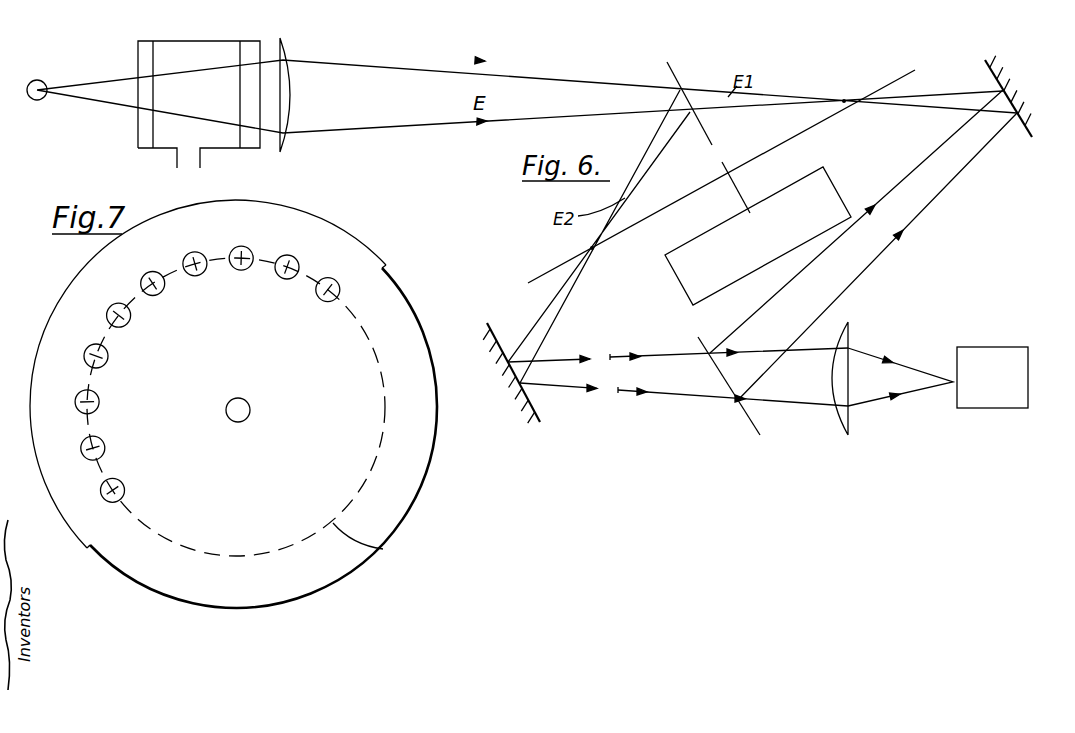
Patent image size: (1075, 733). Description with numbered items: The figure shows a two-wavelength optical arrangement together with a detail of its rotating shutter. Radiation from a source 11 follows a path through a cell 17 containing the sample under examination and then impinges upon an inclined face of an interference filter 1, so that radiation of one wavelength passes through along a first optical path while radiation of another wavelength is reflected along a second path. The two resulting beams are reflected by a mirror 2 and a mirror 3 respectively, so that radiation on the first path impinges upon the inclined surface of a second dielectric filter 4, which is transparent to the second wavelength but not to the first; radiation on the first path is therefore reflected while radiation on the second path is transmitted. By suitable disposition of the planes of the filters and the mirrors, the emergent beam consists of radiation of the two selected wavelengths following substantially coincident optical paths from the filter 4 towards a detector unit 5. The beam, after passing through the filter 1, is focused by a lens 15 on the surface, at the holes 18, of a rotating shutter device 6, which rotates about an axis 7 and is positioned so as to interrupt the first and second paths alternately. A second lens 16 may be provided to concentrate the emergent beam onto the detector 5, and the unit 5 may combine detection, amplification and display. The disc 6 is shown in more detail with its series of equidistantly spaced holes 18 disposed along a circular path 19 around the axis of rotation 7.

In FIG. 6, the interference filter 1 is at (672, 67).
In FIG. 6, the mirror 2 is at (1006, 90).
In FIG. 6, the mirror 3 is at (543, 410).
In FIG. 6, the second dielectric filter 4 is at (748, 421).
In FIG. 6, the detector unit 5 is at (992, 377).
In FIG. 6, the rotating shutter device 6 is at (655, 215).
In FIG. 7, the rotating shutter device 6 is at (392, 520).
In FIG. 6, the axis 7 is at (737, 193).
In FIG. 7, the axis 7 is at (248, 402).
In FIG. 6, the source 11 is at (42, 83).
In FIG. 6, the lens 15 is at (289, 48).
In FIG. 6, the second lens 16 is at (842, 426).
In FIG. 6, the cell 17 is at (167, 52).
In FIG. 6, the holes 18 is at (840, 98).
In FIG. 7, the holes 18 is at (118, 315).
In FIG. 7, the circular path 19 is at (370, 548).